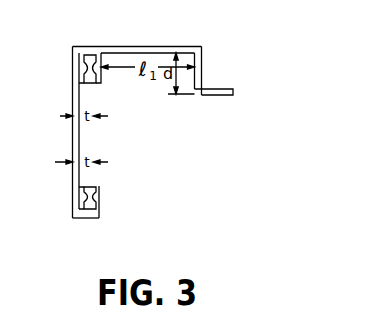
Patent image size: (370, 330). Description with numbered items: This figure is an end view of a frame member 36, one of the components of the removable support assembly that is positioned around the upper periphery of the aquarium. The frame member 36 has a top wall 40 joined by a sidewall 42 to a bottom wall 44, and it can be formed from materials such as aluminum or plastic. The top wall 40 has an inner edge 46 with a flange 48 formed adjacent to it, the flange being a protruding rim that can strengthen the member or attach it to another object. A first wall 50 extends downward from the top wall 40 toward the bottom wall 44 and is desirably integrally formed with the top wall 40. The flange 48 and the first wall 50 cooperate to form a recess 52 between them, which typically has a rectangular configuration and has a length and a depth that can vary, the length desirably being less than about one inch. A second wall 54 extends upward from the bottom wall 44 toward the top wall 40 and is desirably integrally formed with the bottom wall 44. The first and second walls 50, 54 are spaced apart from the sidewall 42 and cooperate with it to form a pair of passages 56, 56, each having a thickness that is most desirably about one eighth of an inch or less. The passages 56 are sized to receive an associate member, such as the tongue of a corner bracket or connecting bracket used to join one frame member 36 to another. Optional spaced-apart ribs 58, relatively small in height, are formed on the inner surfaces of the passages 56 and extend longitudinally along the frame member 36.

The frame member 36 is at (147, 124).
The top wall 40 is at (136, 46).
The sidewall 42 is at (72, 137).
The bottom wall 44 is at (88, 219).
The inner edge 46 is at (233, 91).
The flange 48 is at (215, 76).
The first wall 50 is at (97, 80).
The recess 52 is at (162, 98).
The second wall 54 is at (99, 204).
The passage 56 is at (98, 96).
The rib 58 is at (89, 55).